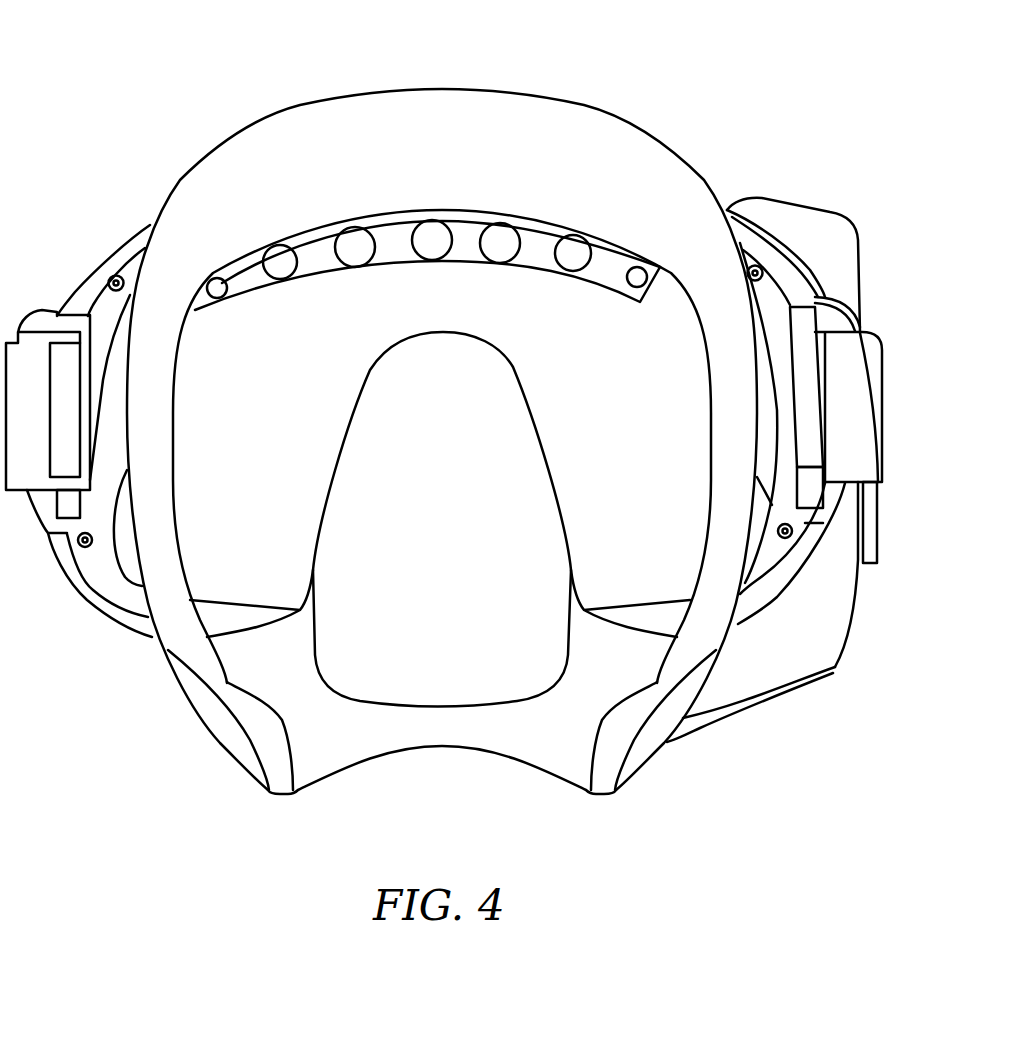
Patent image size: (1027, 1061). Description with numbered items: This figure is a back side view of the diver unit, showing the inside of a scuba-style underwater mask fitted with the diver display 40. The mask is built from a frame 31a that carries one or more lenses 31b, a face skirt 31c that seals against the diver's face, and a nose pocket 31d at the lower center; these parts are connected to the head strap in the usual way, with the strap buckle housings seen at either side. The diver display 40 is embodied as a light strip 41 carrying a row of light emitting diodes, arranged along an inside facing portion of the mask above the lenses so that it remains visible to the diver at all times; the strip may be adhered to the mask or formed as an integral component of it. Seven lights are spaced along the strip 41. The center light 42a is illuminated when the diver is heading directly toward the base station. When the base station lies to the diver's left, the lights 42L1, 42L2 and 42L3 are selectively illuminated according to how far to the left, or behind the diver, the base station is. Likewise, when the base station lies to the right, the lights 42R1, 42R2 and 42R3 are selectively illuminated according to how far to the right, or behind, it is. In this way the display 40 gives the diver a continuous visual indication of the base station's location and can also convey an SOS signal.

The diver display 40 is at (164, 102).
The frame 31a is at (800, 208).
The lens 31b is at (218, 548).
The face skirt 31c is at (575, 123).
The nose pocket 31d is at (438, 673).
The light strip 41 is at (387, 221).
The center light 42a is at (438, 247).
The left light 42L1 is at (355, 258).
The left light 42L2 is at (280, 280).
The left light 42L3 is at (217, 297).
The right light 42R1 is at (497, 255).
The right light 42R2 is at (573, 262).
The right light 42R3 is at (633, 283).